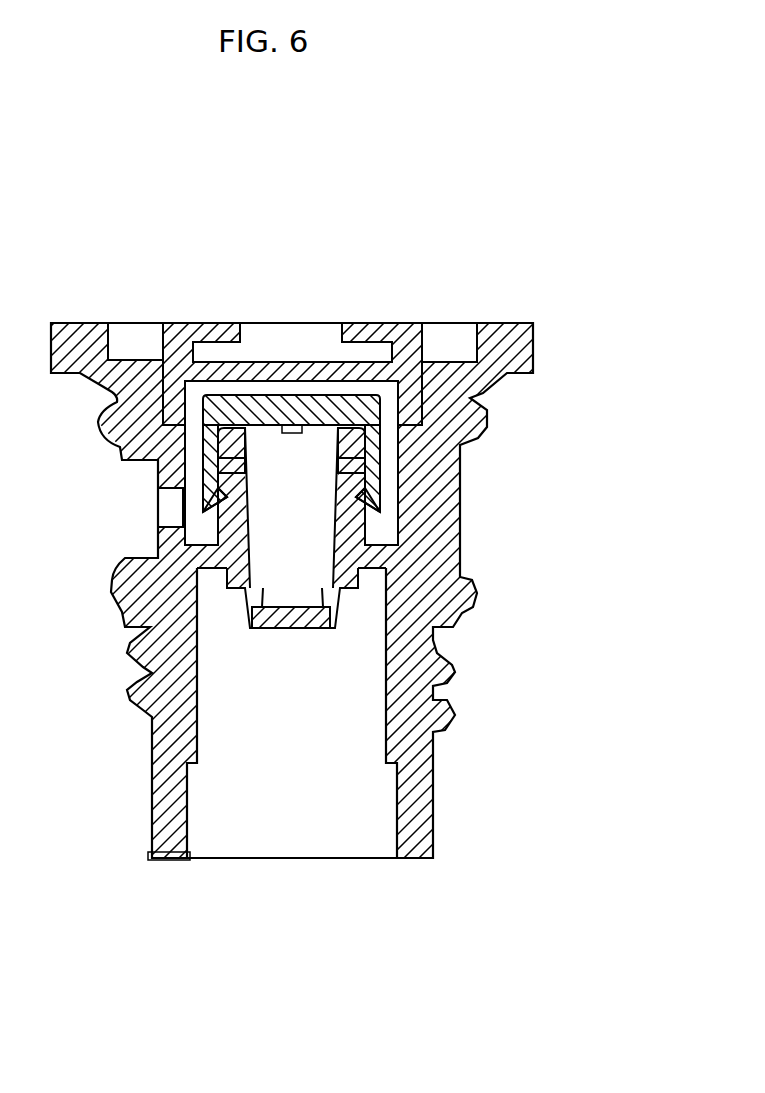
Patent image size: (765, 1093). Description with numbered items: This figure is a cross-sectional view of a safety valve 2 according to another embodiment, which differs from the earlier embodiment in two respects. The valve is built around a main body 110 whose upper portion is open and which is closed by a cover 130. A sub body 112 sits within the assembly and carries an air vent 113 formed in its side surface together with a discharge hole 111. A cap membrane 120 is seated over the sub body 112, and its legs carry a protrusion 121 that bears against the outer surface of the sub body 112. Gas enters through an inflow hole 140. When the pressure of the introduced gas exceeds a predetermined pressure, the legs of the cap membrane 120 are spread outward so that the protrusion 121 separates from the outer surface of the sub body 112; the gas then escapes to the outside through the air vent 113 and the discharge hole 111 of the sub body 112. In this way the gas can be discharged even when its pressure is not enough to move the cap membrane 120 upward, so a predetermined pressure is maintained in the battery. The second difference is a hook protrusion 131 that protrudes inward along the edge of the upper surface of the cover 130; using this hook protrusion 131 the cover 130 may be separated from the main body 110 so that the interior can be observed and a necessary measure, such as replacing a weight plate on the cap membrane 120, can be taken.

The safety valve 2 is at (482, 268).
The main body 110 is at (432, 589).
The discharge hole 111 is at (173, 510).
The sub body 112 is at (237, 557).
The air vent 113 is at (235, 467).
The cap membrane 120 is at (365, 408).
The protrusion 121 is at (365, 490).
The cover 130 is at (405, 333).
The hook protrusion 131 is at (218, 333).
The inflow hole 140 is at (300, 745).